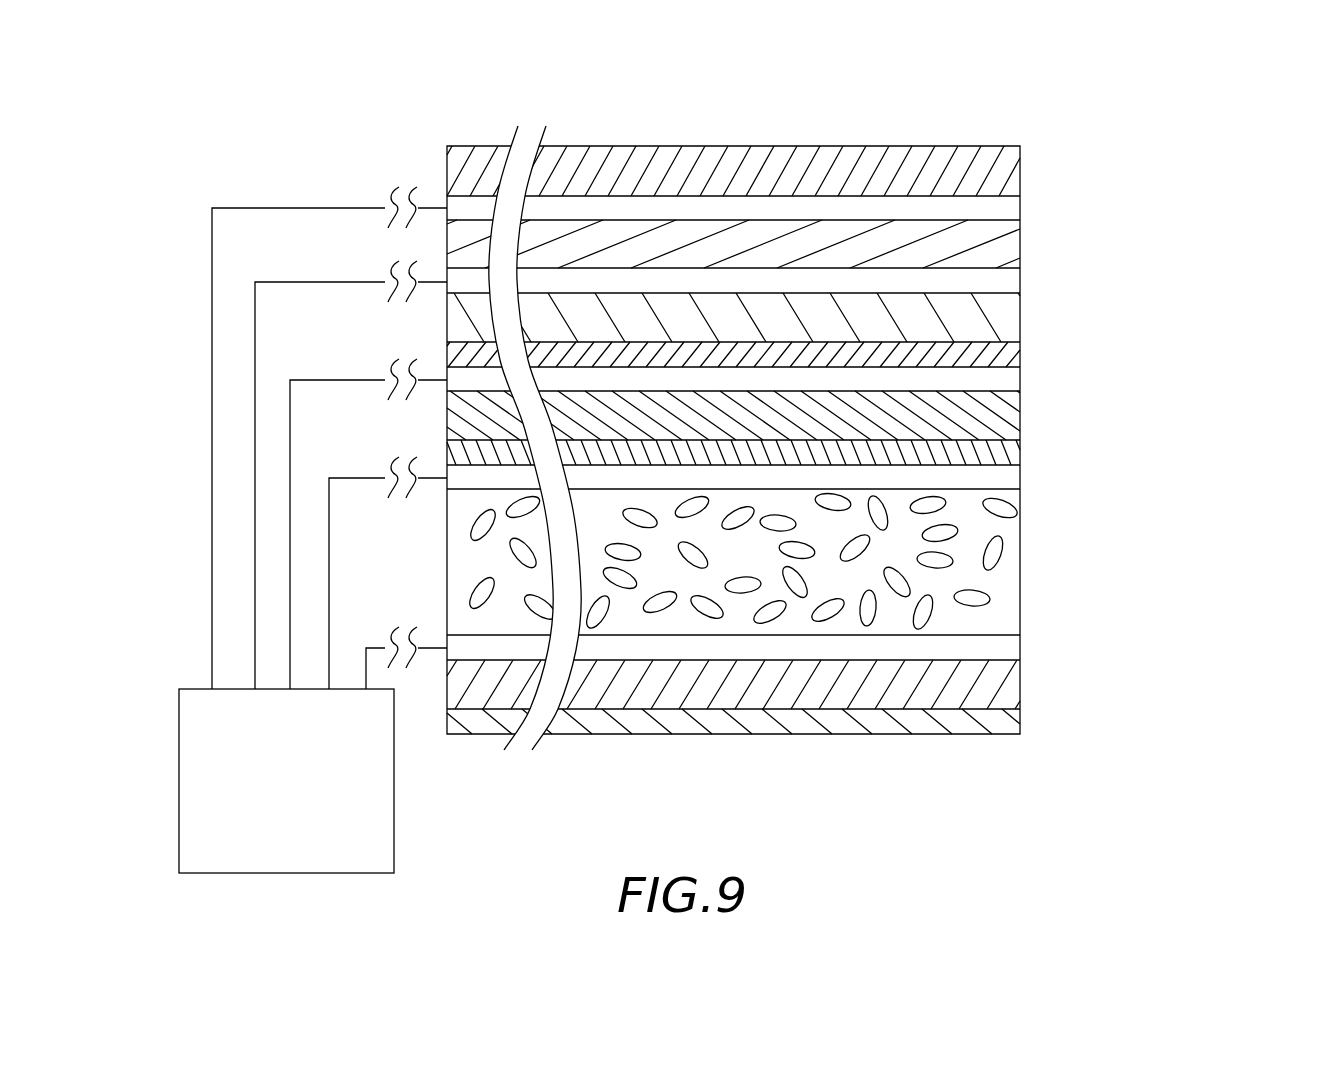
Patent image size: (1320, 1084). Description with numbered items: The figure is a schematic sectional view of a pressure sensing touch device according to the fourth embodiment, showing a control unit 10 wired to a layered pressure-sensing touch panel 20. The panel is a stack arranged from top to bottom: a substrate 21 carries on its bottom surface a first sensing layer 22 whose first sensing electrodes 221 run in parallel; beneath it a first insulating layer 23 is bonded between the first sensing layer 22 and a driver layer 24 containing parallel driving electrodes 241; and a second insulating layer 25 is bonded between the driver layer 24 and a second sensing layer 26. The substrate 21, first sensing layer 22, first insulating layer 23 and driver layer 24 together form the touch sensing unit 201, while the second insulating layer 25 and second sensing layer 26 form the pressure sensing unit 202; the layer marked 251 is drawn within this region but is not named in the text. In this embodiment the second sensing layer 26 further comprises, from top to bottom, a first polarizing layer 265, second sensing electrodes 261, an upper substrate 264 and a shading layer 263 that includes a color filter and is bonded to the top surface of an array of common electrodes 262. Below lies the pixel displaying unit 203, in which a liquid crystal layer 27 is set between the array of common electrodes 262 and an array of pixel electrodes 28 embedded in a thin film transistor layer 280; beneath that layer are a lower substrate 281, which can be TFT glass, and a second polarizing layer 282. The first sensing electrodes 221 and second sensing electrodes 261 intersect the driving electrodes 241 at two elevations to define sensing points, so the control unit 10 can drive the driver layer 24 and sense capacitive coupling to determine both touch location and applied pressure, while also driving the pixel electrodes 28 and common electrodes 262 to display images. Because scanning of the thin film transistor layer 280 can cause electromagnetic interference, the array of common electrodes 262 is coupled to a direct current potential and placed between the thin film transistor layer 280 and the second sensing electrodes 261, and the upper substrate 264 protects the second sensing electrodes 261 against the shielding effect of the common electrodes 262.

The control unit 10 is at (190, 688).
The pressure-sensing touch panel 20 is at (827, 427).
The substrate 21 is at (1010, 177).
The first sensing layer 22 is at (1110, 197).
The first sensing electrodes 221 is at (1007, 213).
The first insulating layer 23 is at (1007, 252).
The driver layer 24 is at (1110, 270).
The driving electrodes 241 is at (1007, 282).
The second insulating layer 25 is at (1110, 312).
The first polarizer 251 is at (1010, 323).
The second sensing layer 26 is at (1110, 372).
The second sensing electrodes 261 is at (1007, 380).
The array of common electrodes 262 is at (1007, 480).
The shading layer 263 is at (1007, 457).
The upper substrate 264 is at (1007, 423).
The first polarizing layer 265 is at (1007, 358).
The liquid crystal layer 27 is at (1010, 563).
The array of pixel electrodes 28 is at (1113, 640).
The thin film transistor layer 280 is at (1010, 652).
The lower substrate 281 is at (1008, 685).
The second polarizing layer 282 is at (1008, 722).
The touch sensing unit 201 is at (1210, 167).
The pressure sensing unit 202 is at (1210, 280).
The pixel displaying unit 203 is at (1210, 448).